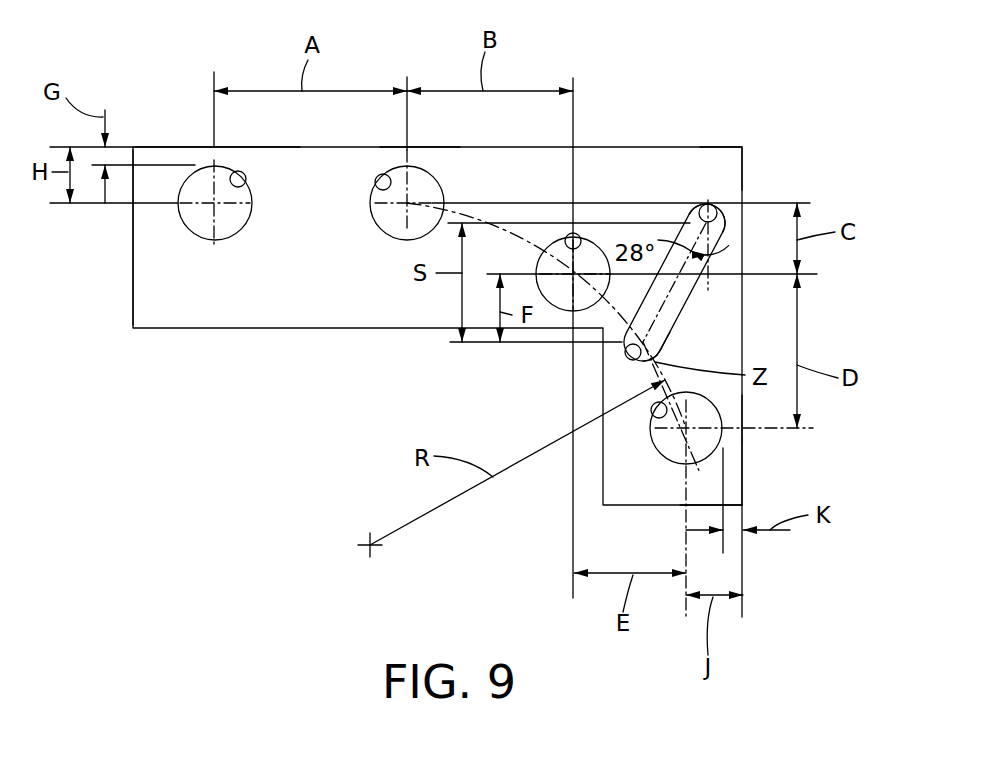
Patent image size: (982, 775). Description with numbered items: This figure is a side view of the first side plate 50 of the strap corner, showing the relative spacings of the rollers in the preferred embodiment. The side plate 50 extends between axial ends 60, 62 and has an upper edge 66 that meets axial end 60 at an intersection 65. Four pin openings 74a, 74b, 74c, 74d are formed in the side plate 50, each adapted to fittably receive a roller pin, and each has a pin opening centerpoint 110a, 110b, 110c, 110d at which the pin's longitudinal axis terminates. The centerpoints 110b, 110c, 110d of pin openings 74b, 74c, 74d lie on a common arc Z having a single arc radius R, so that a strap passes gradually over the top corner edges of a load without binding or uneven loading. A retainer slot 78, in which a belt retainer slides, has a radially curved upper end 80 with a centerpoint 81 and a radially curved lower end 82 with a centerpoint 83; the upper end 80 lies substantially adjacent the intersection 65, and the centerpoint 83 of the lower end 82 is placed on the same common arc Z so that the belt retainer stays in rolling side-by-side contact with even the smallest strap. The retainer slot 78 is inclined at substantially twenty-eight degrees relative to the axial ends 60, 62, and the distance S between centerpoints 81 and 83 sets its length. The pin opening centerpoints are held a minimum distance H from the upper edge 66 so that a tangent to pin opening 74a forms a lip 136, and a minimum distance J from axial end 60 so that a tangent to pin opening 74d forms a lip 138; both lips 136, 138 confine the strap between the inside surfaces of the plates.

The side plate 50 is at (256, 328).
The axial end 60 is at (743, 464).
The axial end 62 is at (133, 268).
The intersection 65 is at (742, 147).
The upper edge 66 is at (190, 147).
The pin opening 74a is at (234, 176).
The pin opening 74b is at (380, 176).
The pin opening 74c is at (566, 235).
The pin opening 74d is at (656, 413).
The retainer slot 78 is at (683, 296).
The upper end 80 is at (720, 220).
The centerpoint 81 is at (693, 207).
The lower end 82 is at (628, 349).
The centerpoint 83 is at (662, 337).
The pin opening centerpoint 110a is at (213, 205).
The pin opening centerpoint 110b is at (405, 205).
The pin opening centerpoint 110c is at (572, 277).
The pin opening centerpoint 110d is at (663, 456).
The lip 136 is at (420, 157).
The lip 138 is at (742, 415).